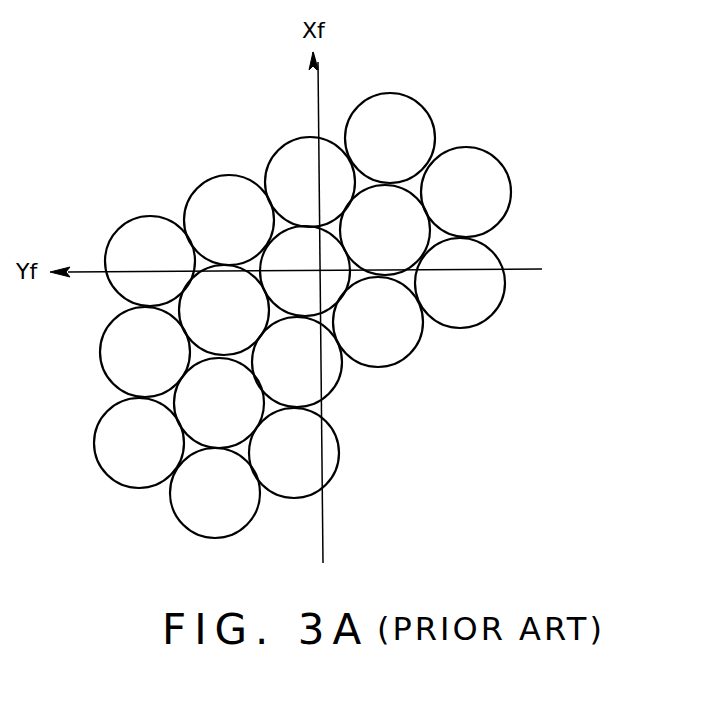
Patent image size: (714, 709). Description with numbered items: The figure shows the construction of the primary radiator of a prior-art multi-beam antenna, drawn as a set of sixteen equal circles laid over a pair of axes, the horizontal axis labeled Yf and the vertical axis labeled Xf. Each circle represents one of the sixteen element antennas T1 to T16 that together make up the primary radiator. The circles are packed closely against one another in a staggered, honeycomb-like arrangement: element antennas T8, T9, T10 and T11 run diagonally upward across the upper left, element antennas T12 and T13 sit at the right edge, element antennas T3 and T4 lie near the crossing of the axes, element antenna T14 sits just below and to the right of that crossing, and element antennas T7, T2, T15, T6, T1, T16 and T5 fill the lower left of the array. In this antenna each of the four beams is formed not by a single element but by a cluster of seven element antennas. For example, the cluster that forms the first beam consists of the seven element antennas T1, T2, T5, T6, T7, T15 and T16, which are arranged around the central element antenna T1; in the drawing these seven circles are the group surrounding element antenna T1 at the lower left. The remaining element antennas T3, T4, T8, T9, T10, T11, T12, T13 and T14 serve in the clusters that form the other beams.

The element antenna T1 is at (219, 403).
The element antenna T2 is at (224, 310).
The element antenna T3 is at (305, 271).
The element antenna T4 is at (385, 230).
The element antenna T5 is at (215, 493).
The element antenna T6 is at (139, 443).
The element antenna T7 is at (145, 352).
The element antenna T8 is at (150, 261).
The element antenna T9 is at (229, 220).
The element antenna T10 is at (310, 182).
The element antenna T11 is at (390, 138).
The element antenna T12 is at (466, 192).
The element antenna T13 is at (460, 283).
The element antenna T14 is at (378, 322).
The element antenna T15 is at (297, 362).
The element antenna T16 is at (294, 453).